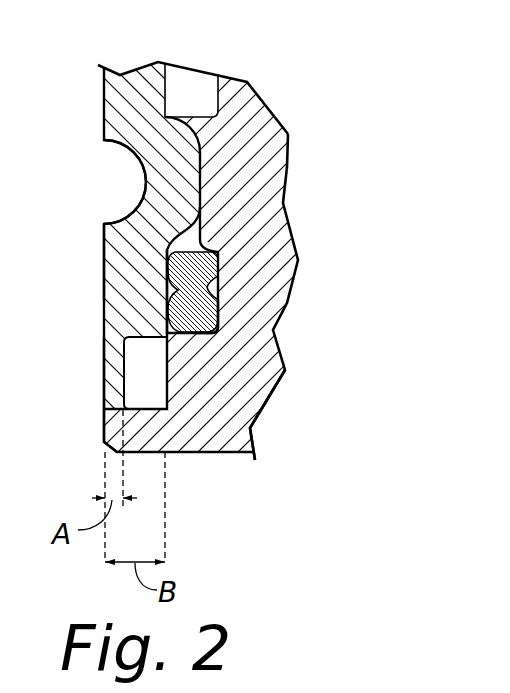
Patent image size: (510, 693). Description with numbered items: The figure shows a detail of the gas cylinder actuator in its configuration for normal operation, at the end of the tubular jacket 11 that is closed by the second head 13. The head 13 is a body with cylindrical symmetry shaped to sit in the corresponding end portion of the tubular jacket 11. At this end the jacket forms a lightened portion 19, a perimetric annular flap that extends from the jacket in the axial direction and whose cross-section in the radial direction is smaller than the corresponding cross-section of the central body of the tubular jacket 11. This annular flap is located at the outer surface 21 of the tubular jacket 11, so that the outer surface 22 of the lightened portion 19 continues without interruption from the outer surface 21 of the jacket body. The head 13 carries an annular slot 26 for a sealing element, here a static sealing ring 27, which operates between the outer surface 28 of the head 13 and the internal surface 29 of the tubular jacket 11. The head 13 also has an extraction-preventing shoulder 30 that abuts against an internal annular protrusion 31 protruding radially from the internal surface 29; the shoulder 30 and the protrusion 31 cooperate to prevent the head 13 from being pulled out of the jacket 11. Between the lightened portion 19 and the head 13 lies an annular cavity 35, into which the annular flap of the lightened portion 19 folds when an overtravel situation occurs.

The tubular jacket 11 is at (138, 82).
The second head 13 is at (277, 395).
The lightened portion 19 is at (117, 360).
The outer surface 21 is at (104, 237).
The outer surface of the lightened portion 22 is at (104, 398).
The annular slot 26 is at (222, 233).
The static sealing ring 27 is at (205, 322).
The outer surface of the head 28 is at (219, 277).
The internal surface 29 is at (167, 288).
The extraction-preventing shoulder 30 is at (180, 117).
The internal annular protrusion 31 is at (170, 158).
The annular cavity 35 is at (147, 385).